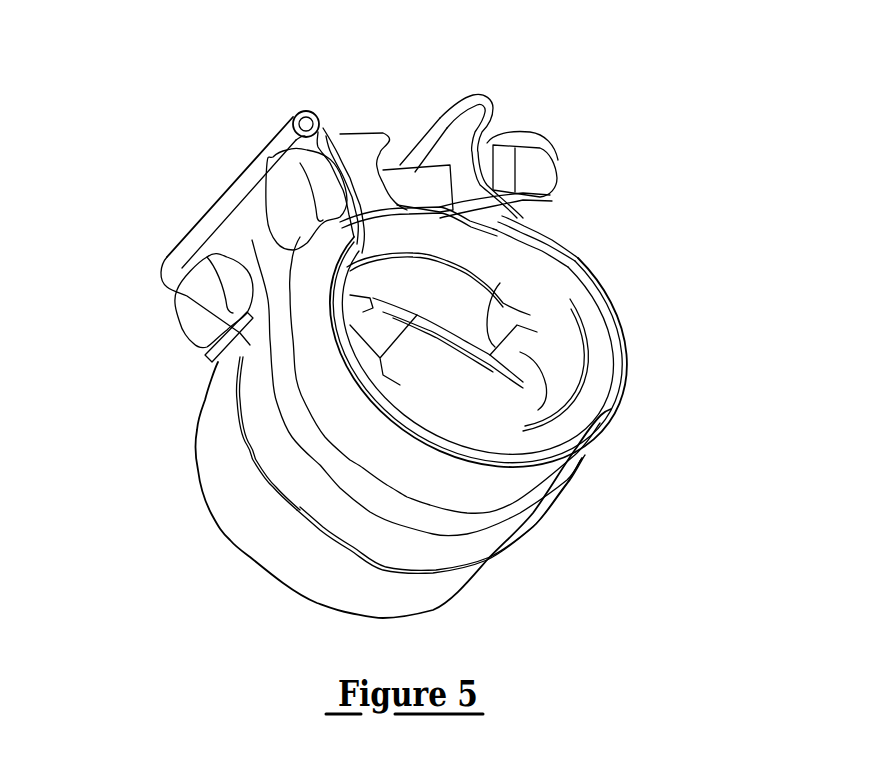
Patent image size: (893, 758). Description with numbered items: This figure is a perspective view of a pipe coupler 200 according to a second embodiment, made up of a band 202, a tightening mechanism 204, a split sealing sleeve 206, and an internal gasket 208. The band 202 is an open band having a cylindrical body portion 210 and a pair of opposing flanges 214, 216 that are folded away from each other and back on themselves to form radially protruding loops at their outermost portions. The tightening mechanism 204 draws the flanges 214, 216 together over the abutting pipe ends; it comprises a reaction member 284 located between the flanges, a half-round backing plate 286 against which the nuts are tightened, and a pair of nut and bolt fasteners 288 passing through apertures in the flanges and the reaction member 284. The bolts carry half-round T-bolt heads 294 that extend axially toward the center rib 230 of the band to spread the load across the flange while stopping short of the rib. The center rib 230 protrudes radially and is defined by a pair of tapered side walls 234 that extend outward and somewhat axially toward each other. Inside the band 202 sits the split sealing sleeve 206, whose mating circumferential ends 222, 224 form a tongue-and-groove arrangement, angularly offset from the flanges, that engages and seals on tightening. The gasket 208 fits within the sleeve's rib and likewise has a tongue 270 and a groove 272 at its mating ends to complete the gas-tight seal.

The pipe coupler 200 is at (637, 258).
The band 202 is at (212, 478).
The tightening mechanism 204 is at (528, 120).
The split sealing sleeve 206 is at (577, 320).
The internal gasket 208 is at (547, 417).
The cylindrical body portion 210 is at (217, 417).
The flange 214 is at (259, 137).
The flange 216 is at (487, 92).
The mating end 222 is at (503, 202).
The mating end 224 is at (553, 228).
The center rib 230 is at (510, 535).
The tapered side walls 234 is at (320, 532).
The tongue 270 is at (494, 325).
The groove 272 is at (540, 363).
The reaction member 284 is at (370, 135).
The half-round backing plate 286 is at (487, 145).
The nut and bolt fasteners 288 is at (550, 157).
The half-round T-bolt heads 294 is at (200, 305).